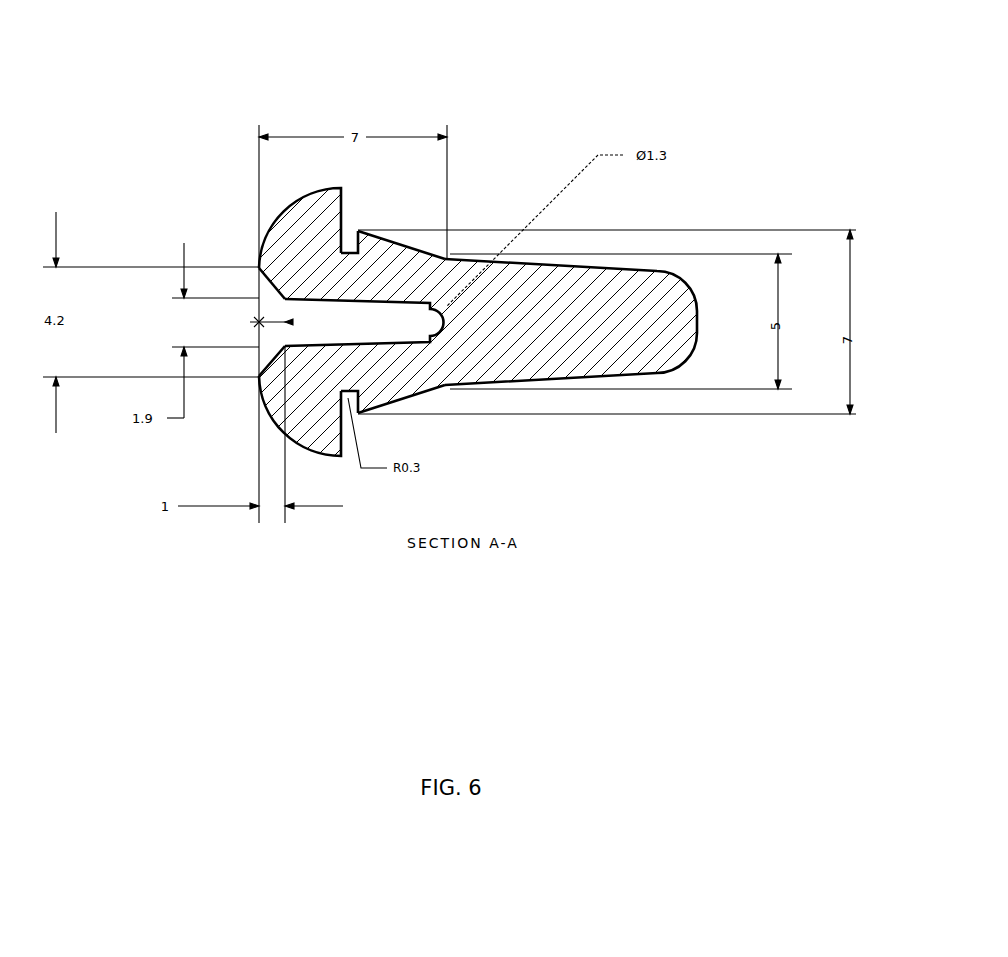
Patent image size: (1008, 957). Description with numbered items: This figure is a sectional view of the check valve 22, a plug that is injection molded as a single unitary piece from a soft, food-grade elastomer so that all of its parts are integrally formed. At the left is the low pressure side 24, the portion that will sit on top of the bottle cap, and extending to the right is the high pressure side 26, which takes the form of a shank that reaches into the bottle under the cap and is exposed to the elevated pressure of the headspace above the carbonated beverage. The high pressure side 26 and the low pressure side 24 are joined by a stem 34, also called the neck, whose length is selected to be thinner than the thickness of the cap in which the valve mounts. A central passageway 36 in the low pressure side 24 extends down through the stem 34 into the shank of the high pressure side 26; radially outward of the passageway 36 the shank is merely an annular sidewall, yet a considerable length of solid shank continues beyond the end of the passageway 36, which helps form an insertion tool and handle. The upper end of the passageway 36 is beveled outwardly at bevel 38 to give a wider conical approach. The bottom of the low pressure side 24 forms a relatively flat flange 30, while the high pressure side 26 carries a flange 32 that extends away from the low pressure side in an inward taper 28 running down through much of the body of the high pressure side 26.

The check valve 22 is at (533, 68).
The low pressure side 24 is at (315, 210).
The high pressure side 26 is at (645, 348).
The inward taper 28 is at (428, 390).
The flange 30 is at (349, 396).
The flange 32 is at (366, 238).
The stem 34 is at (350, 247).
The passageway 36 is at (345, 320).
The bevel 38 is at (260, 292).